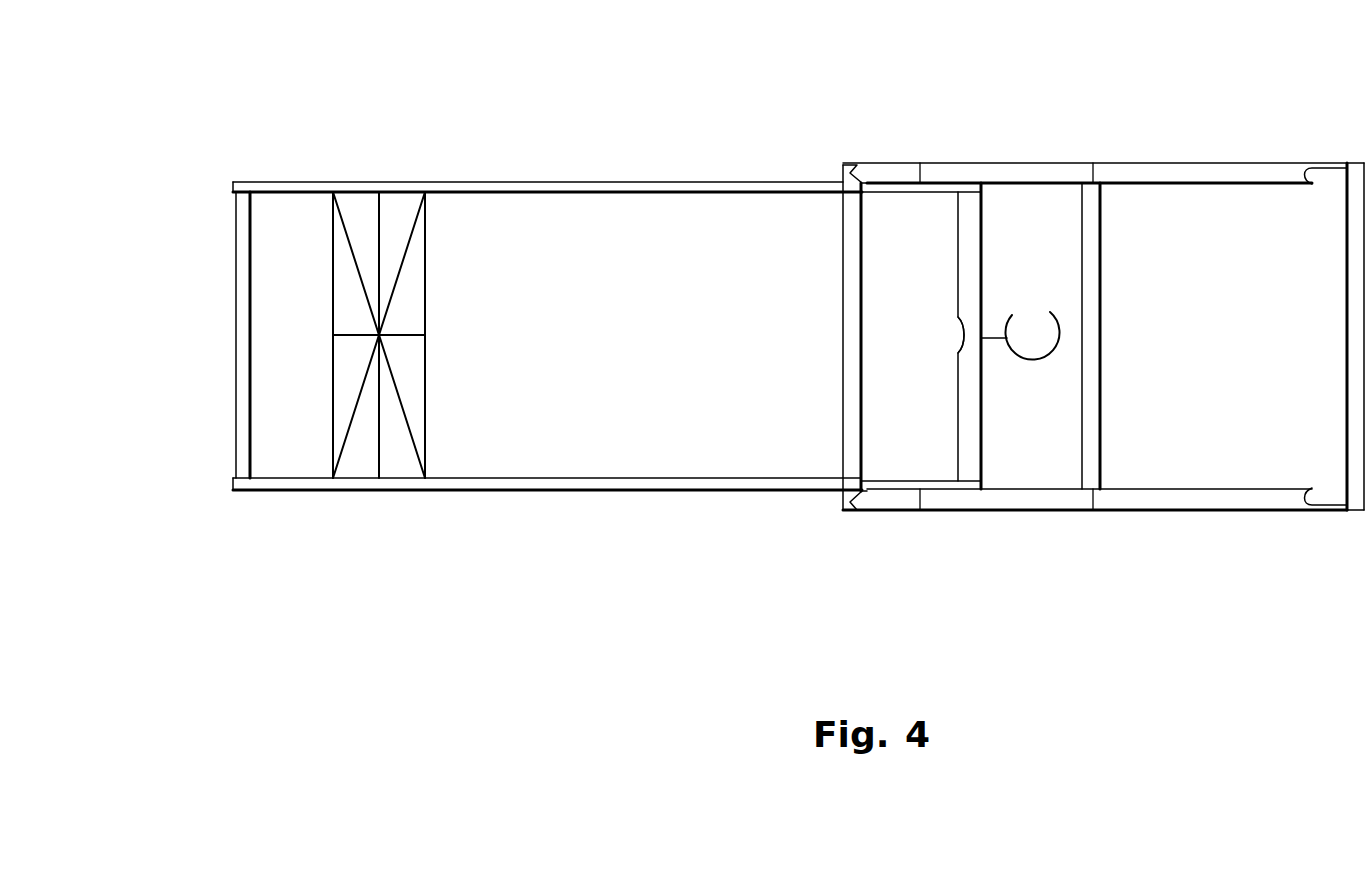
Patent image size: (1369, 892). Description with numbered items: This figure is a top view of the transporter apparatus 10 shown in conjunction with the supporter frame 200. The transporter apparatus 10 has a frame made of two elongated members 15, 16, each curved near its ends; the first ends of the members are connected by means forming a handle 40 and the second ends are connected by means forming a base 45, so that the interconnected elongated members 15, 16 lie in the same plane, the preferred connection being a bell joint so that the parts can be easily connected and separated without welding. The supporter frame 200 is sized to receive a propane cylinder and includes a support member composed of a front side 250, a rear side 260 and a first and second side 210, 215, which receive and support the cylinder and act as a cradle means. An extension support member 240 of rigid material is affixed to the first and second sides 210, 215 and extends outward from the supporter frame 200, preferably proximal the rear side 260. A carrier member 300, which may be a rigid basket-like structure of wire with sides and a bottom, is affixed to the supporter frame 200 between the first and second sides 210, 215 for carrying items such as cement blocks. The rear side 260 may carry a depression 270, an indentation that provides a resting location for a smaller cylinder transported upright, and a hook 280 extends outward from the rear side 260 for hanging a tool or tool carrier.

The transporter apparatus 10 is at (1092, 302).
The elongated member 15 is at (1170, 165).
The elongated member 16 is at (1188, 510).
The handle 40 is at (1345, 292).
The base 45 is at (853, 203).
The supporter frame 200 is at (471, 329).
The first side 210 is at (507, 183).
The second side 215 is at (552, 490).
The extension support member 240 is at (1103, 337).
The front side 250 is at (233, 358).
The rear side 260 is at (957, 257).
The depression 270 is at (967, 333).
The hook 280 is at (1028, 365).
The carrier member 300 is at (332, 410).